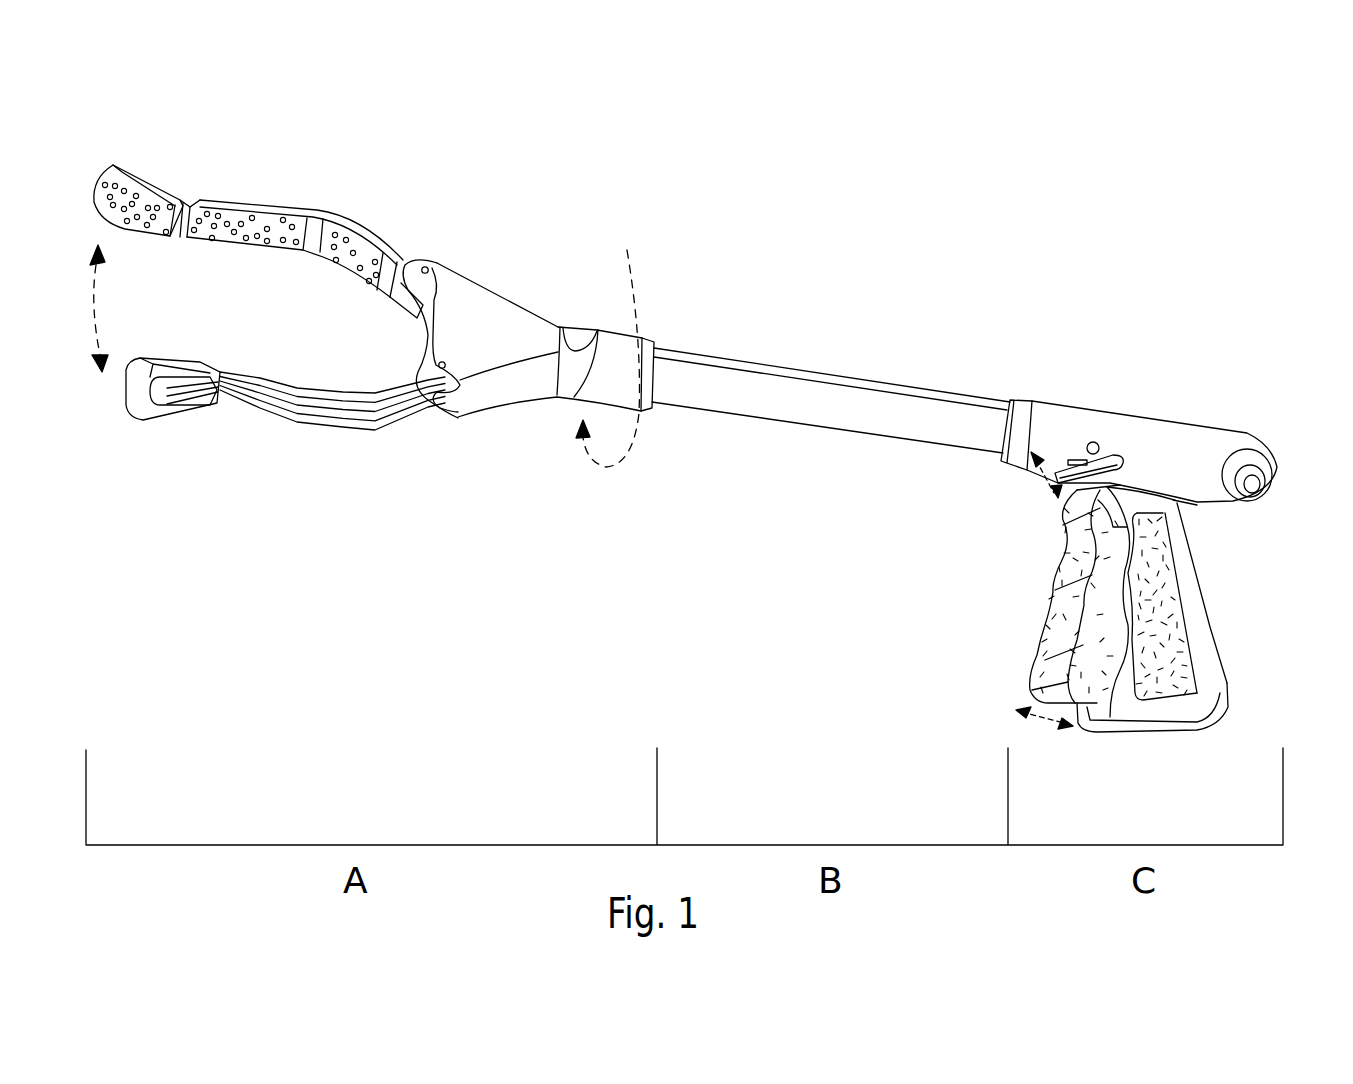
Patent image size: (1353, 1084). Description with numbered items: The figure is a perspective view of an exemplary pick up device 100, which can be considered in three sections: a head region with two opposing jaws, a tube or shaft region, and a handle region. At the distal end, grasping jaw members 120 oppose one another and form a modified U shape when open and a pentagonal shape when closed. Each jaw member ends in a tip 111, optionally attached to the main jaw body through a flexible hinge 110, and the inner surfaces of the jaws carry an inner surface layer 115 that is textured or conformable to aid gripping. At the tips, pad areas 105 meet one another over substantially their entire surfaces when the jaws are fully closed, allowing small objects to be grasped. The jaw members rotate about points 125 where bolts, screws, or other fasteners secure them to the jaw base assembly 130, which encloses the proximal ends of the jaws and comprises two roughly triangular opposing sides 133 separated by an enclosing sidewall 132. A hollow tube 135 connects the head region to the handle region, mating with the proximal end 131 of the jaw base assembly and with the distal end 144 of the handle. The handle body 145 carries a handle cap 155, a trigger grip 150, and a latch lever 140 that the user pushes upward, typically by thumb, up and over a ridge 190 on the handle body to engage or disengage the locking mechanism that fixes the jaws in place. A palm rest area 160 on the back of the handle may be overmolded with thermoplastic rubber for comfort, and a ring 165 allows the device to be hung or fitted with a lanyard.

The pick up device 100 is at (806, 233).
The pad area 105 is at (146, 232).
The flexible hinge 110 is at (198, 202).
The tip 111 is at (185, 420).
The inner surface layer 115 is at (257, 244).
The grasping jaw members 120 is at (295, 207).
The pivot fastener points 125 is at (428, 262).
The jaw base assembly 130 is at (538, 279).
The proximal end of jaw base assembly 131 is at (655, 412).
The enclosing sidewall 132 is at (508, 383).
The opposing sides of jaw base assembly 133 is at (485, 313).
The hollow tube 135 is at (815, 405).
The latch lever 140 is at (1056, 478).
The distal end of handle 144 is at (1009, 398).
The handle body 145 is at (1113, 410).
The trigger grip 150 is at (1040, 655).
The handle cap 155 is at (1127, 736).
The palm rest area 160 is at (1223, 645).
The ring 165 is at (1255, 470).
The ridge 190 is at (1077, 457).